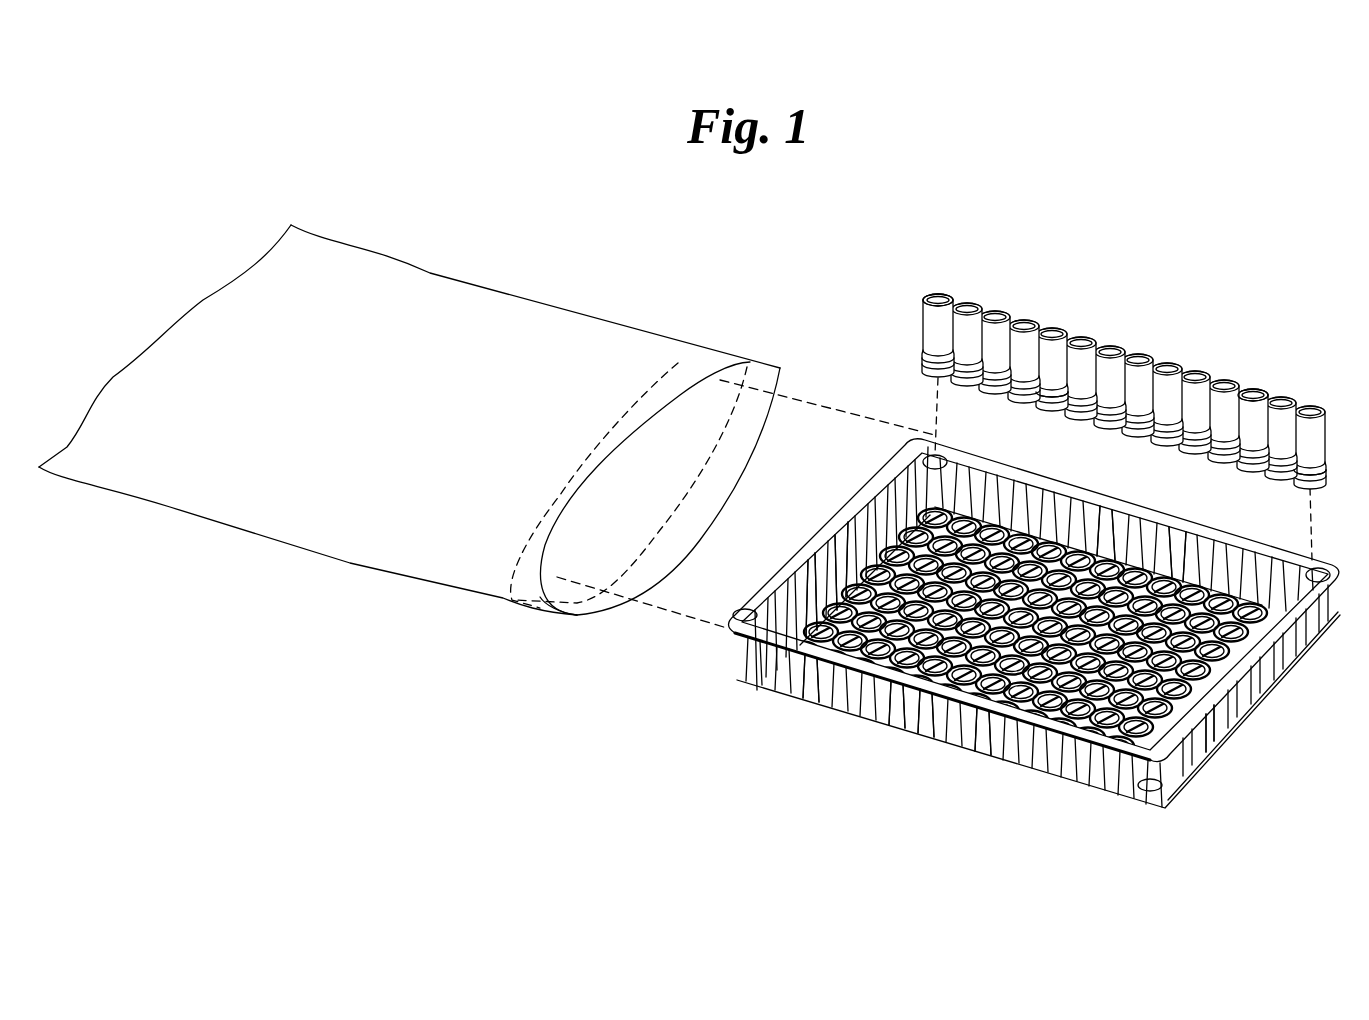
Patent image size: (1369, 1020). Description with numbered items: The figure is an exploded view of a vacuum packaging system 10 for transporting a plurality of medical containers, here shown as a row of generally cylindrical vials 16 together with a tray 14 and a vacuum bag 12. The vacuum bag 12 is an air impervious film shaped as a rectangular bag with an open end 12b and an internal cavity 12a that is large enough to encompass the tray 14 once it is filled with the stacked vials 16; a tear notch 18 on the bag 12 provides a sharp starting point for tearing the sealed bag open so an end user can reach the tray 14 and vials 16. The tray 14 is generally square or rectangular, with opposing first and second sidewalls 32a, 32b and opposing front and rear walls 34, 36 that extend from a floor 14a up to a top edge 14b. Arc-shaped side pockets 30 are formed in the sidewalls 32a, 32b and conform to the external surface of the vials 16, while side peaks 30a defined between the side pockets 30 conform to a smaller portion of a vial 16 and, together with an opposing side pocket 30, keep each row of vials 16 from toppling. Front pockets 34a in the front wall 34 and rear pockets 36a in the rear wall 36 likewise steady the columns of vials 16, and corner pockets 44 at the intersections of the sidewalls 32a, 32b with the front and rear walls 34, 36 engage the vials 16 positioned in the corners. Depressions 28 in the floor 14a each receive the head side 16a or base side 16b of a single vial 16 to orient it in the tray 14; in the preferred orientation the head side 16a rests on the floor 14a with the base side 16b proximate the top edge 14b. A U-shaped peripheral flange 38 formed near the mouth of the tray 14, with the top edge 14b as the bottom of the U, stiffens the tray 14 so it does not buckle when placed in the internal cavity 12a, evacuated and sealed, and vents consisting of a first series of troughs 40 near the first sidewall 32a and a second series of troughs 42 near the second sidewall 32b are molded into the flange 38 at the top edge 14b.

The vacuum packaging system 10 is at (1082, 310).
The vacuum bag 12 is at (457, 560).
The internal cavity 12a is at (700, 430).
The open end 12b is at (572, 617).
The tray 14 is at (720, 663).
The floor 14a is at (1020, 495).
The top edge 14b is at (1045, 725).
The vials 16 is at (1333, 432).
The head side 16a is at (1053, 400).
The base side 16b is at (970, 307).
The tear notch 18 is at (678, 363).
The depressions 28 is at (1087, 775).
The side pockets 30 is at (805, 565).
The side peaks 30a is at (862, 497).
The first sidewall 32a is at (1240, 703).
The second sidewall 32b is at (893, 478).
The front wall 34 is at (923, 730).
The front pockets 34a is at (822, 690).
The rear wall 36 is at (1110, 517).
The rear pockets 36a is at (1203, 540).
The peripheral flange 38 is at (923, 707).
The first series of troughs 40 is at (1215, 745).
The second series of troughs 42 is at (845, 528).
The corner pockets 44 is at (935, 458).